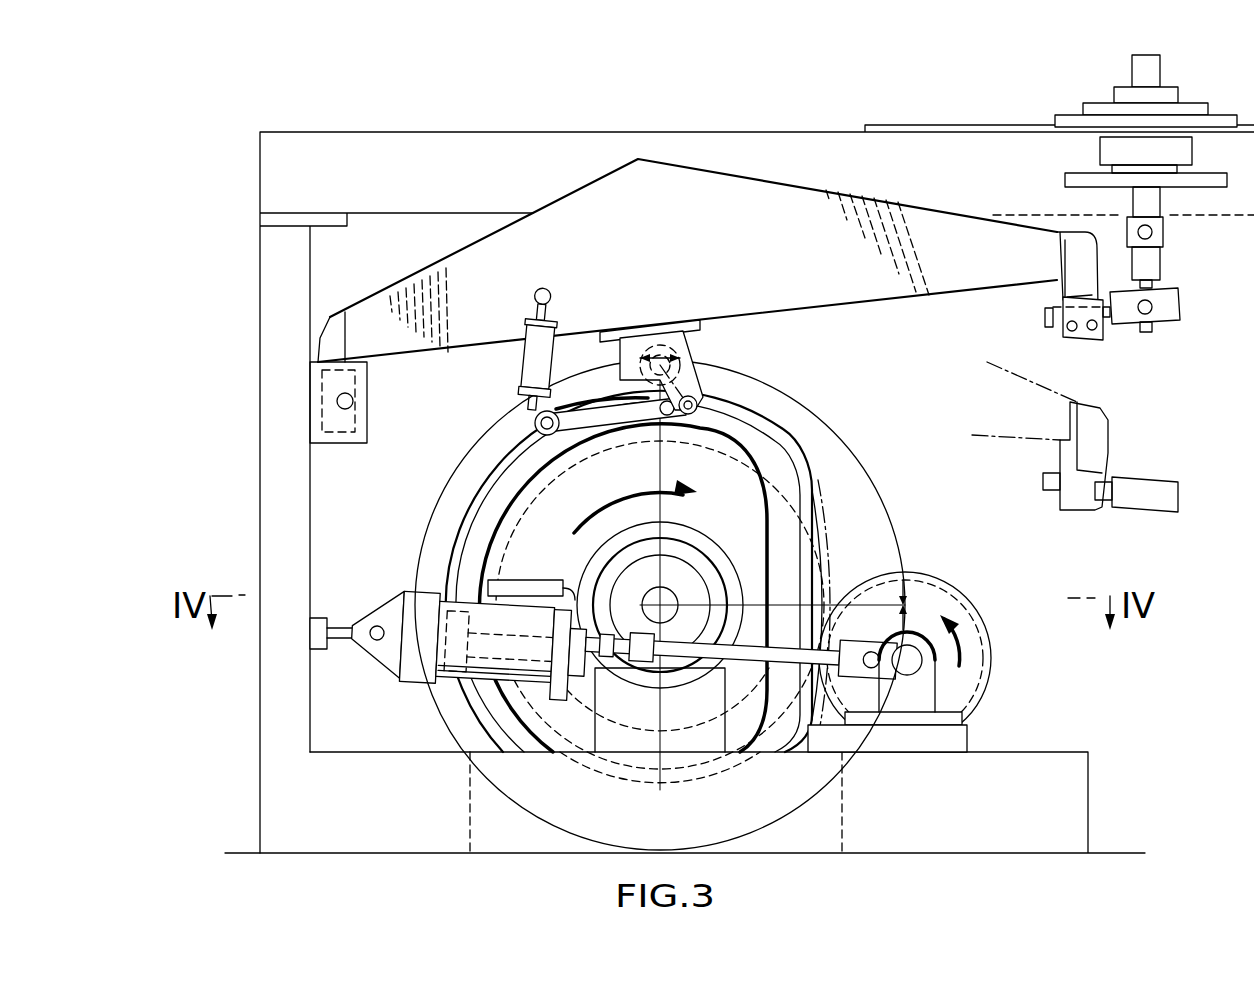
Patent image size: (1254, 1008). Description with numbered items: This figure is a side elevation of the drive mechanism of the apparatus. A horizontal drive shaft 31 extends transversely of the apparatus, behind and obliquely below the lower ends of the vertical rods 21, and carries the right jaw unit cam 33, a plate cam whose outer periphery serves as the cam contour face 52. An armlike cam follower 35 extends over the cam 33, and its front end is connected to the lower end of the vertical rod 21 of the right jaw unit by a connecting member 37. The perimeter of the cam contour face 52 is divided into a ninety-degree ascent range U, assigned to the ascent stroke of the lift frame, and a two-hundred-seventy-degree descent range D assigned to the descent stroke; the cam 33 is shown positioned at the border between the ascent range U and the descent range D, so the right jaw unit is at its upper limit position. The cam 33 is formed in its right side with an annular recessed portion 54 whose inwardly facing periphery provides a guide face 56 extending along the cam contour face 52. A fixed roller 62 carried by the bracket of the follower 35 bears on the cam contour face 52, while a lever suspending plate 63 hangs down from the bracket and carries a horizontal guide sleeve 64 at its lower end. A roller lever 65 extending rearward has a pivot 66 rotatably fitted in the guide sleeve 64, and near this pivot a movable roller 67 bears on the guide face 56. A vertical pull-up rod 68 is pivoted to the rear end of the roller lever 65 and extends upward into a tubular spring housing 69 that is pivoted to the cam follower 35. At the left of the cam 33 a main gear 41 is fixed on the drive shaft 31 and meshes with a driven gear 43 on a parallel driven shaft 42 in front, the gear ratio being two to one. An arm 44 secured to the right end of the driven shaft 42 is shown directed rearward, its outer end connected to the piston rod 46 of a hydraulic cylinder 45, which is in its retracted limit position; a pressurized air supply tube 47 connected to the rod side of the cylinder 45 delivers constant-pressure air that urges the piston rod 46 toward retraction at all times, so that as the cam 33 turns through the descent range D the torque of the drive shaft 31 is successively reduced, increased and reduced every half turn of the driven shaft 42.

The vertical rod 21 is at (1162, 72).
The drive shaft 31 is at (662, 620).
The right jaw unit cam 33 is at (812, 490).
The cam follower 35 is at (946, 282).
The connecting member 37 is at (1162, 262).
The main gear 41 is at (826, 555).
The driven shaft 42 is at (910, 663).
The driven gear 43 is at (966, 596).
The arm 44 is at (862, 672).
The hydraulic cylinder 45 is at (480, 678).
The piston rod 46 is at (745, 726).
The pressurized air supply tube 47 is at (530, 580).
The cam contour face 52 is at (462, 498).
The annular recessed portion 54 is at (480, 526).
The guide face 56 is at (488, 560).
The fixed roller 62 is at (645, 345).
The lever suspending plate 63 is at (640, 342).
The guide sleeve 64 is at (703, 420).
The roller lever 65 is at (600, 432).
The pivot 66 is at (700, 400).
The movable roller 67 is at (682, 425).
The pull-up rod 68 is at (535, 420).
The spring housing 69 is at (526, 335).
The descent range D is at (660, 605).
The ascent range U is at (830, 436).